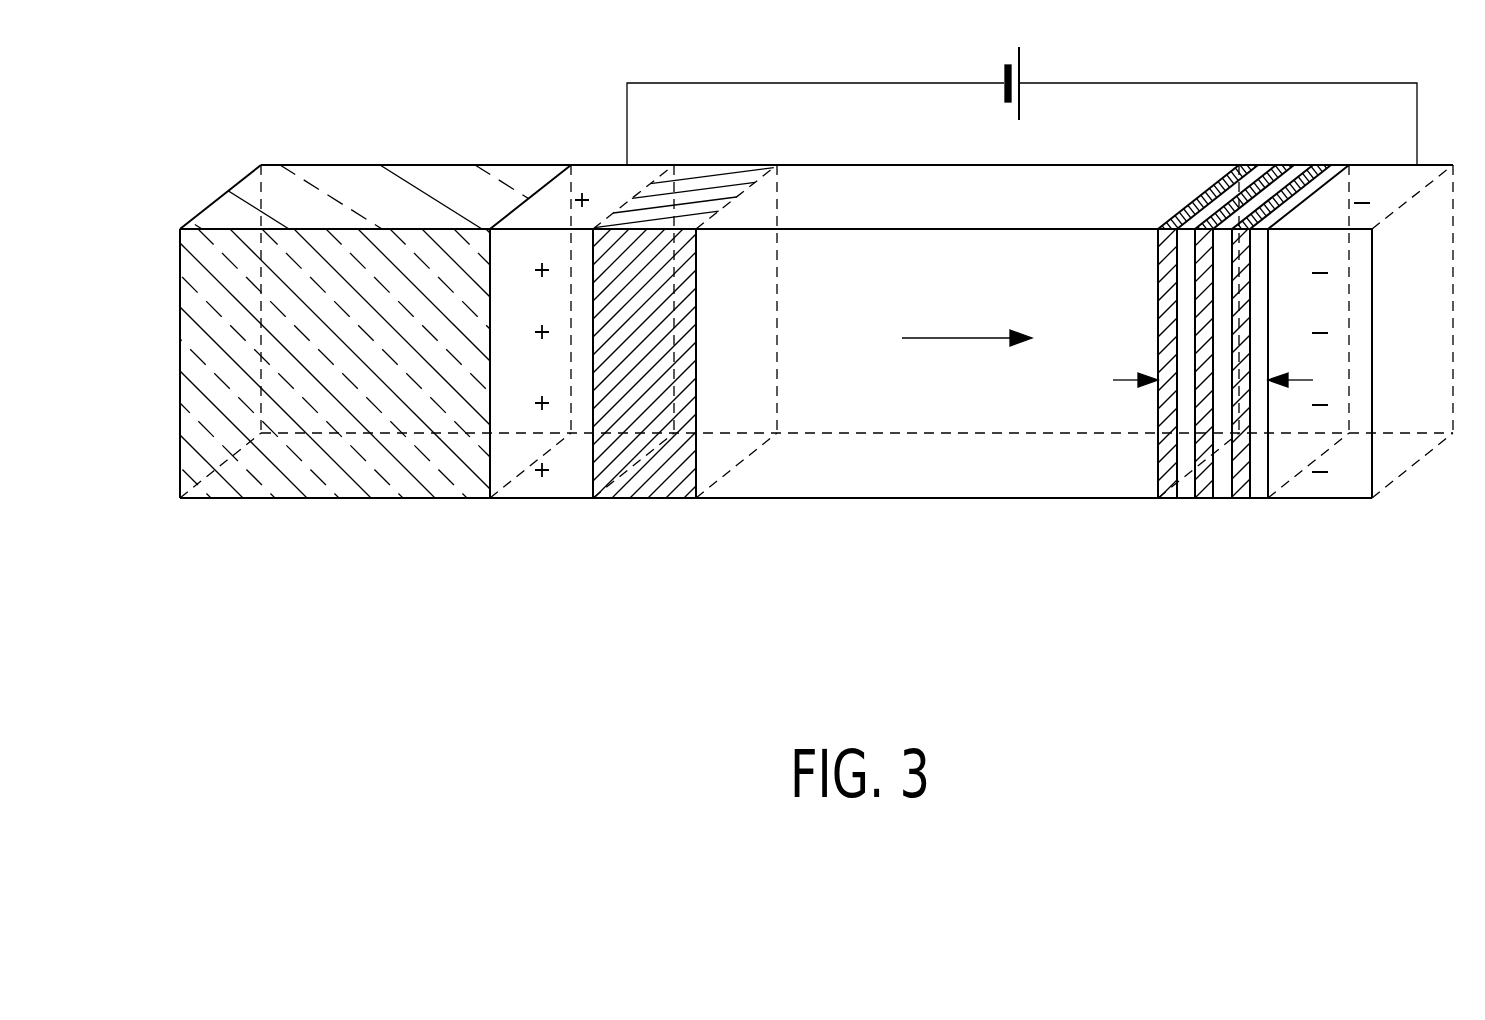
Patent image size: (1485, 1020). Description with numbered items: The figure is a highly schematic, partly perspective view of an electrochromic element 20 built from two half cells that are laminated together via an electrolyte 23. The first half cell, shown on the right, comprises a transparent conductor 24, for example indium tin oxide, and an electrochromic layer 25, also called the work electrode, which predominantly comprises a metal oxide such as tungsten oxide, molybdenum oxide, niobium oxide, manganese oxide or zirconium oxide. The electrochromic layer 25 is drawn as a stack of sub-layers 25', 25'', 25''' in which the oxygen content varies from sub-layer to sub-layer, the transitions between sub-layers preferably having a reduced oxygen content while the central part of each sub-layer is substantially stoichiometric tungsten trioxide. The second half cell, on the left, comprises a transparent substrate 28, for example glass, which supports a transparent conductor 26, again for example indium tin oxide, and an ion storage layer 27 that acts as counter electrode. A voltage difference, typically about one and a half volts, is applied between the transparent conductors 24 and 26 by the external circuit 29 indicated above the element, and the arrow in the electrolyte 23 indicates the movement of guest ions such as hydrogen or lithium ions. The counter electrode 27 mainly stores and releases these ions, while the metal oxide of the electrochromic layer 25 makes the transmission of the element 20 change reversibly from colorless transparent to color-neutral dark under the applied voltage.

The electrochromic element 20 is at (904, 366).
The electrolyte 23 is at (902, 480).
The transparent conductor 24 is at (1360, 379).
The electrochromic layer 25 is at (1187, 303).
The sub-layer 25' is at (1208, 309).
The sub-layer 25'' is at (1244, 267).
The sub-layer 25''' is at (1281, 305).
The transparent conductor 26 is at (563, 480).
The ion storage layer 27 is at (652, 480).
The transparent substrate 28 is at (290, 480).
The voltage source circuit 29 is at (583, 118).